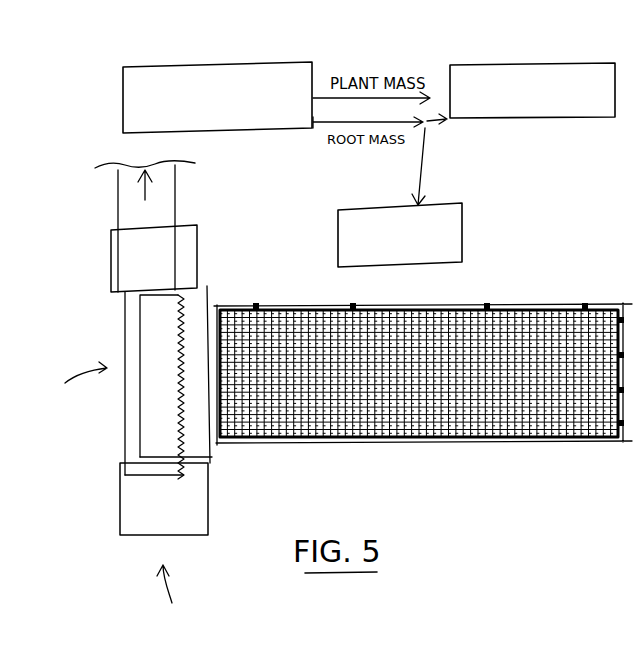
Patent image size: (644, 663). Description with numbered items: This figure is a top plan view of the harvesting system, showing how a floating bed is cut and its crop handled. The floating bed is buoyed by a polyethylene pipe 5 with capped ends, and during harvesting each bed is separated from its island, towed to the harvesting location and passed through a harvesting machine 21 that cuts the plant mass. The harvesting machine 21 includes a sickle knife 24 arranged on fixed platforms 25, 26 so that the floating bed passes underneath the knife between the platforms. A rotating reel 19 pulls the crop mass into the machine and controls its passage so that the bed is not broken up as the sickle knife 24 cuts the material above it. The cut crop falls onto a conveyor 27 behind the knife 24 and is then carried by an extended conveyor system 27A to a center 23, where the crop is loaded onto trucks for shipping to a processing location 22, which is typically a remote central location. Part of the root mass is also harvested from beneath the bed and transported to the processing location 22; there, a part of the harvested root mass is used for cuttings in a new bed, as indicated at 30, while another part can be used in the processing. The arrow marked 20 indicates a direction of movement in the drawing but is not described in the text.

The polyethylene pipe 5 is at (432, 445).
The rotating reel 19 is at (145, 437).
The tray feed direction 20 is at (176, 593).
The harvesting machine 21 is at (71, 387).
The processing location 22 is at (470, 115).
The center 23 is at (270, 128).
The sickle knife 24 is at (182, 392).
The fixed platform 25 is at (111, 272).
The fixed platform 26 is at (122, 493).
The conveyor 27 is at (132, 333).
The extended conveyor system 27A is at (132, 200).
The cuttings in a new bed 30 is at (462, 228).